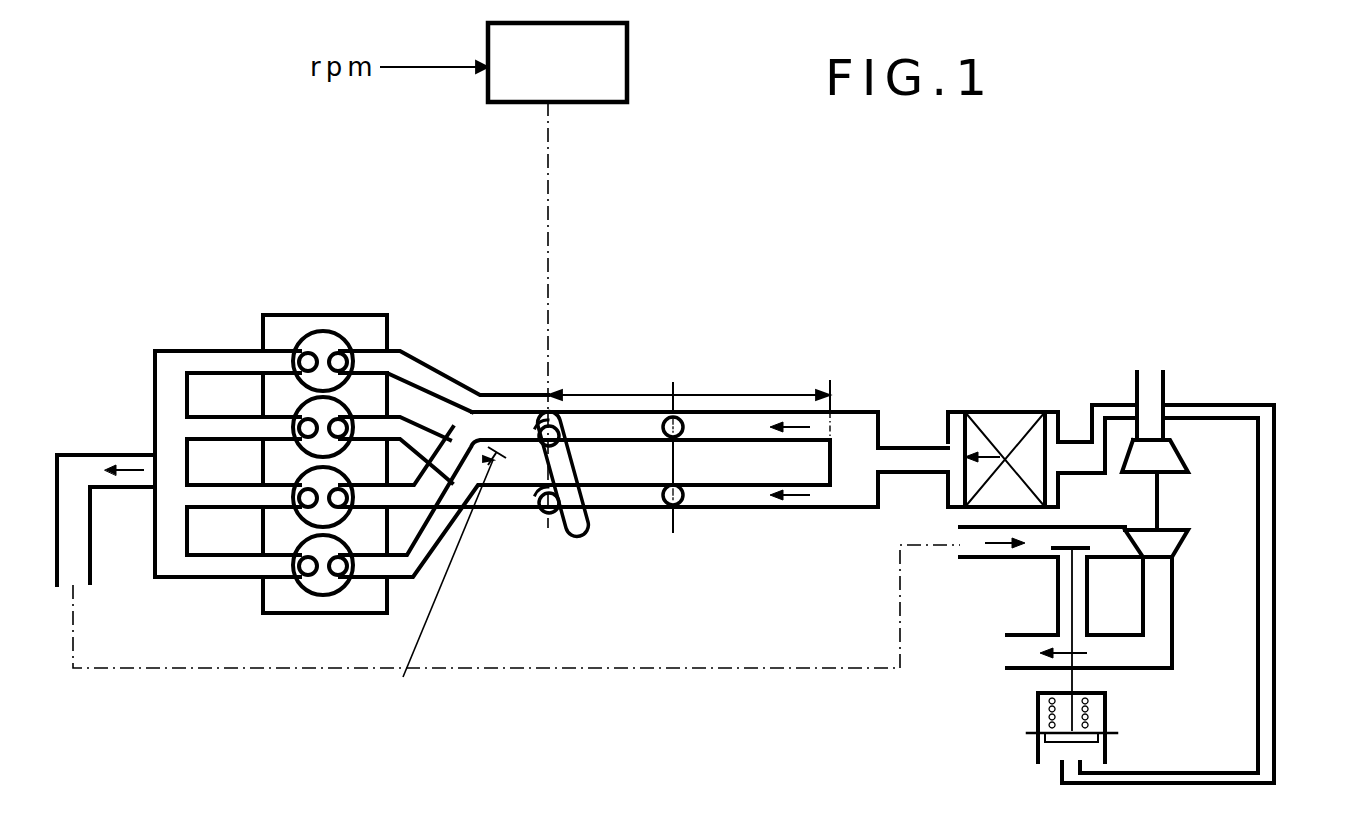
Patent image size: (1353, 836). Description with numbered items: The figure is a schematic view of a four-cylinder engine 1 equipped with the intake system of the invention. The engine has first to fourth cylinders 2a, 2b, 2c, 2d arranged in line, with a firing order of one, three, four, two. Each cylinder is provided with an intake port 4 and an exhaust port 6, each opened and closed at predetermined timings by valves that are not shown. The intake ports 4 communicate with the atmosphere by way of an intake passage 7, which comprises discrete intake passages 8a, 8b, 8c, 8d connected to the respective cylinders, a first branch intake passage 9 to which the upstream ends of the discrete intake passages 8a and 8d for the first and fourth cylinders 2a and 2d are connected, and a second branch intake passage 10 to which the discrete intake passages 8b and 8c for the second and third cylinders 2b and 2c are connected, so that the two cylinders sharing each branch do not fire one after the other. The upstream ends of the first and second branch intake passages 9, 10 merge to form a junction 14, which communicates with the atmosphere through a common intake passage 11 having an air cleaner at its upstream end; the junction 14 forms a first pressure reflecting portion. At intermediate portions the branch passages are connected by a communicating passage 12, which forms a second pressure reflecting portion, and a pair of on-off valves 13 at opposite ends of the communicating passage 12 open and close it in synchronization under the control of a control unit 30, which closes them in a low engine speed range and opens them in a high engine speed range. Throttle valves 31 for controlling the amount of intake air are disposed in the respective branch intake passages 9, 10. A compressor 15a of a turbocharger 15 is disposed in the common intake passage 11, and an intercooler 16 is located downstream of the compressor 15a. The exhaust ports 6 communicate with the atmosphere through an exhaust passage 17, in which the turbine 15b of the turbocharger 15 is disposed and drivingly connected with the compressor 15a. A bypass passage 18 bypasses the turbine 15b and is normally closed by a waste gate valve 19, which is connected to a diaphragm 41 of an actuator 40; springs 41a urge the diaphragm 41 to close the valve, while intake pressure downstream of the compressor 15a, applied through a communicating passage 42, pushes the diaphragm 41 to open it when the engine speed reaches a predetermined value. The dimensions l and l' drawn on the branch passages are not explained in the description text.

The four-cylinder engine 1 is at (352, 322).
The first cylinder 2a is at (310, 332).
The second cylinder 2b is at (345, 398).
The third cylinder 2c is at (300, 490).
The fourth cylinder 2d is at (312, 598).
The intake port 4 is at (340, 352).
The exhaust port 6 is at (300, 355).
The intake passage 7 is at (771, 414).
The discrete intake passage 8a is at (430, 368).
The discrete intake passage 8b is at (445, 400).
The discrete intake passage 8c is at (440, 548).
The discrete intake passage 8d is at (440, 520).
The first branch intake passage 9 is at (708, 412).
The second branch intake passage 10 is at (728, 510).
The common intake passage 11 is at (922, 446).
The communicating passage 12 is at (590, 430).
The on-off valves 13 is at (545, 422).
The junction 14 is at (866, 445).
The turbocharger 15 is at (1166, 563).
The compressor 15a is at (1182, 455).
The turbine 15b is at (1178, 544).
The intercooler 16 is at (1006, 425).
The exhaust passage 17 is at (62, 558).
The bypass passage 18 is at (1058, 585).
The waste gate valve 19 is at (1076, 585).
The control unit 30 is at (596, 104).
The throttle valves 31 is at (684, 500).
The actuator 40 is at (1062, 719).
The diaphragm 41 is at (1106, 733).
The springs 41a is at (1040, 705).
The communicating passage 42 is at (1276, 615).
The length of first collective pipe l is at (689, 382).
The length of second collective pipe l' is at (454, 562).